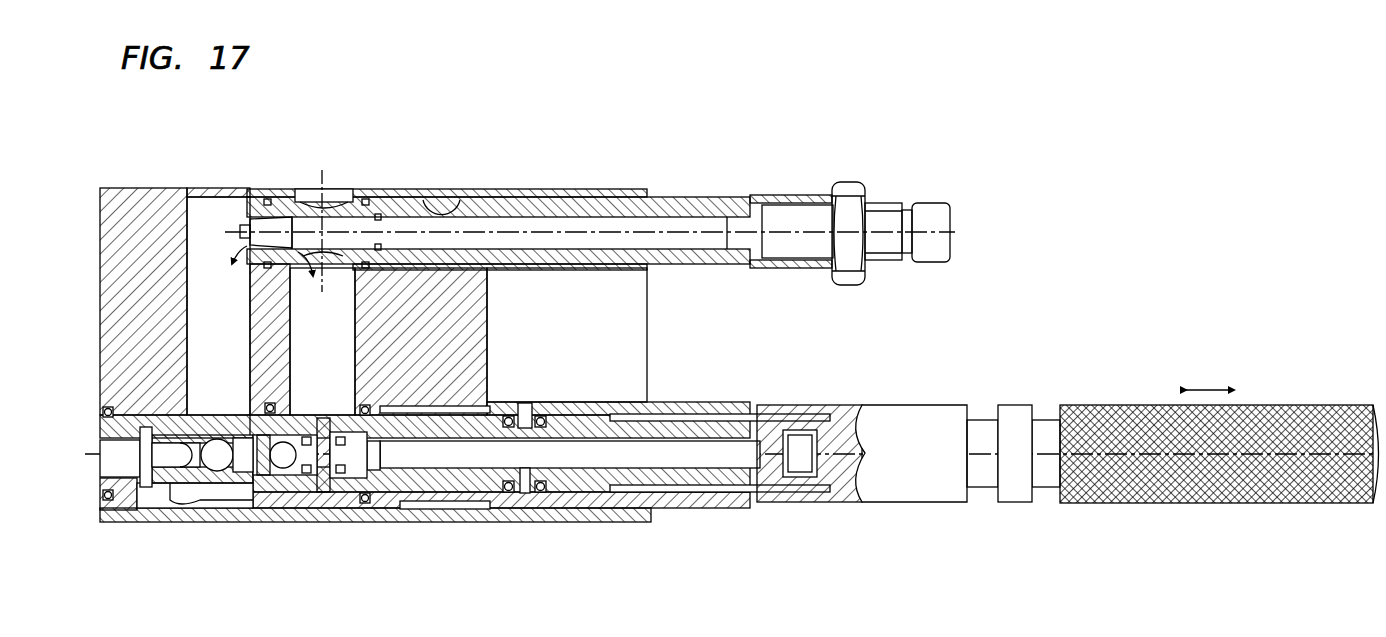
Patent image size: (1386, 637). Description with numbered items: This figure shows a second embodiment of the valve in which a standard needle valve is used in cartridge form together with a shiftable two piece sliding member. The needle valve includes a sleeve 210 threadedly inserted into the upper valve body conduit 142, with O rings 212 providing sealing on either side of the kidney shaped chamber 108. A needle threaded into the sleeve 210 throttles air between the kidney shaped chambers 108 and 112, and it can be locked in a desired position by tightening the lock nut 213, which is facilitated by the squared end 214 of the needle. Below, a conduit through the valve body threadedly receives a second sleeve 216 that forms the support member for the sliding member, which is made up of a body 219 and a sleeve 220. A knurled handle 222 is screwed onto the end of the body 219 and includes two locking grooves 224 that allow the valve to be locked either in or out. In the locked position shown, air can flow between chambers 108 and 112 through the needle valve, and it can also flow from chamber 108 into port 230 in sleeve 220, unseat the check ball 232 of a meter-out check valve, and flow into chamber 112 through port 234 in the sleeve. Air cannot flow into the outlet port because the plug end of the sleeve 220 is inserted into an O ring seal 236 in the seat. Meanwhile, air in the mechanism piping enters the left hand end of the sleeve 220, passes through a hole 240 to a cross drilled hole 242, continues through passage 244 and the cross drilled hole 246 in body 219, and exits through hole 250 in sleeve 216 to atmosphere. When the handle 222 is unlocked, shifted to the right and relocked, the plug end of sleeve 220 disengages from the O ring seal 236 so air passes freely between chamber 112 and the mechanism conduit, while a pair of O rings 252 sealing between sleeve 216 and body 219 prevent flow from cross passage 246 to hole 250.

The kidney shaped chamber 108 is at (337, 324).
The kidney shaped chamber 112 is at (228, 324).
The upper valve body conduit 142 is at (460, 200).
The sleeve 210 is at (700, 197).
The O rings 212 is at (365, 190).
The lock nut 213 is at (850, 182).
The squared end 214 is at (930, 203).
The second sleeve 216 is at (708, 500).
The body 219 is at (572, 490).
The sleeve 220 is at (248, 417).
The knurled handle 222 is at (1200, 487).
The locking grooves 224 is at (992, 503).
The port 230 is at (283, 468).
The check ball 232 is at (217, 439).
The port 234 is at (182, 466).
The O ring seal 236 is at (103, 412).
The hole 240 is at (237, 484).
The cross drilled hole 242 is at (326, 450).
The passage 244 is at (425, 458).
The cross drilled hole 246 is at (533, 427).
The hole 250 is at (522, 404).
The O rings 252 is at (540, 493).